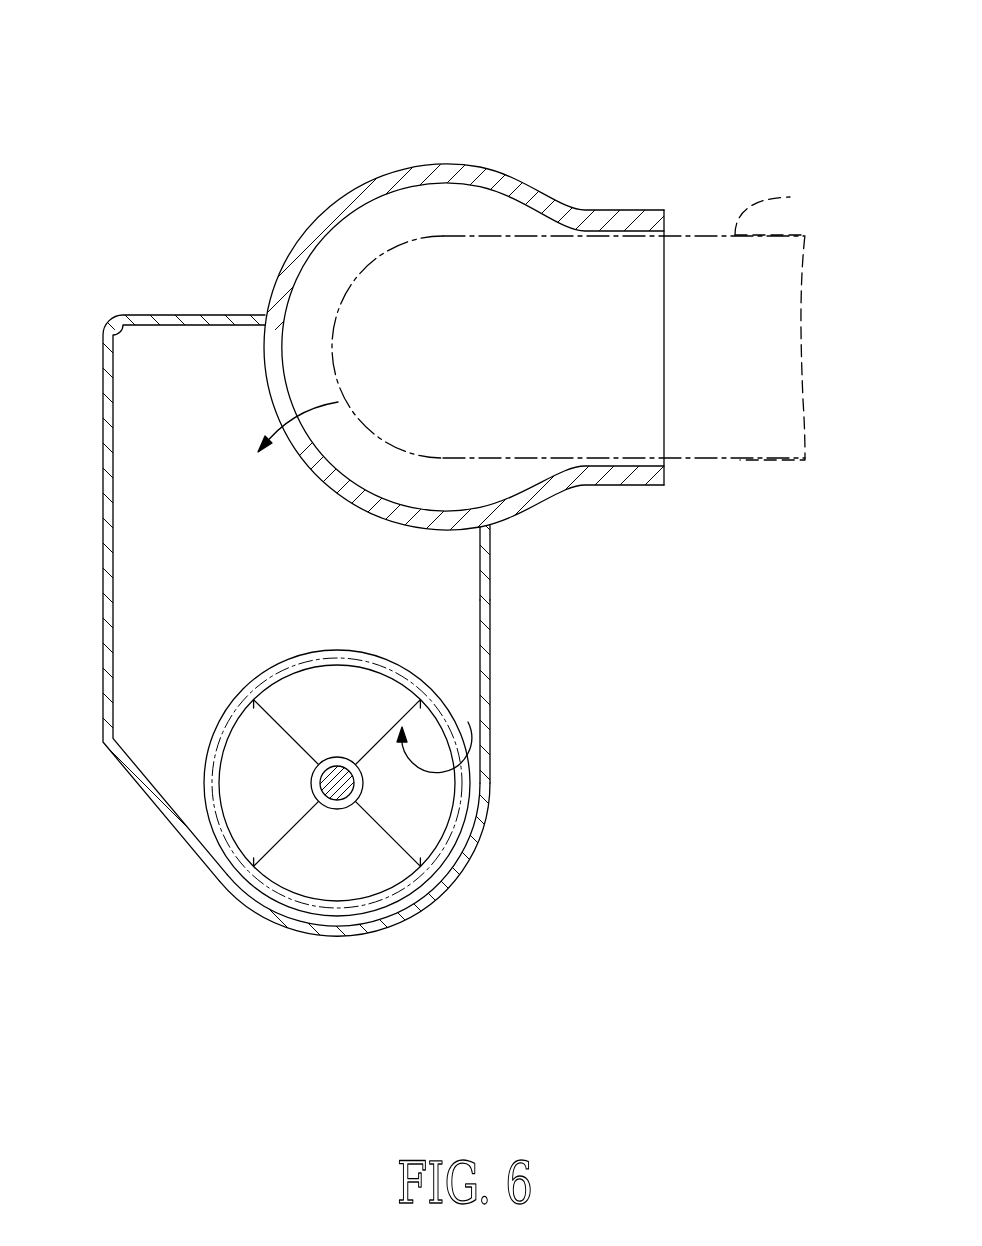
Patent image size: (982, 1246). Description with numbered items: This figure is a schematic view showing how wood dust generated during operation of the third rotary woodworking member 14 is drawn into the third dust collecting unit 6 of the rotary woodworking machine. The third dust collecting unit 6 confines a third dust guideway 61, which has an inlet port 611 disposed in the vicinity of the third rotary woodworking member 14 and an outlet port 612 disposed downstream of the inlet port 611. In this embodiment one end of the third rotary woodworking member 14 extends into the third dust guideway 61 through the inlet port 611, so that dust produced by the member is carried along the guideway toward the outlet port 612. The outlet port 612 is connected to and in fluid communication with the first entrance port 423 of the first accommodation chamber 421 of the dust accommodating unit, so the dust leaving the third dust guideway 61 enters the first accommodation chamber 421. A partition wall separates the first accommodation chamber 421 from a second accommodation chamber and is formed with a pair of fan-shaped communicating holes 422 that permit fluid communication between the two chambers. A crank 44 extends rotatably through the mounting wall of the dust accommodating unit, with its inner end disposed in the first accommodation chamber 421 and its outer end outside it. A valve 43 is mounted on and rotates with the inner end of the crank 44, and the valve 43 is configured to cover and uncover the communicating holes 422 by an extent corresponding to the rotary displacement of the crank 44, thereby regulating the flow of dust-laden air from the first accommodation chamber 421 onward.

The third dust collecting unit 6 is at (466, 152).
The third dust guideway 61 is at (362, 235).
The inlet port 611 is at (664, 410).
The outlet port 612 is at (278, 405).
The third rotary woodworking member 14 is at (790, 197).
The first accommodation chamber 421 is at (452, 602).
The fan-shaped communicating holes 422 is at (228, 800).
The first entrance port 423 is at (492, 538).
The valve 43 is at (337, 905).
The crank 44 is at (337, 795).